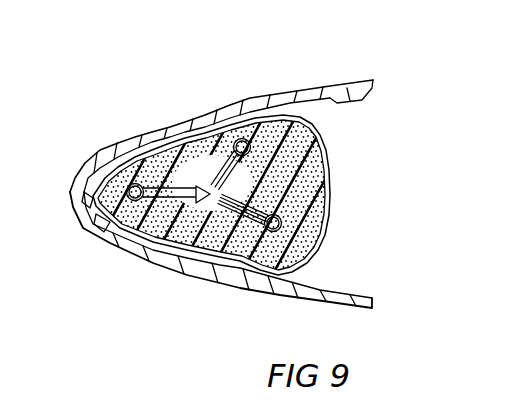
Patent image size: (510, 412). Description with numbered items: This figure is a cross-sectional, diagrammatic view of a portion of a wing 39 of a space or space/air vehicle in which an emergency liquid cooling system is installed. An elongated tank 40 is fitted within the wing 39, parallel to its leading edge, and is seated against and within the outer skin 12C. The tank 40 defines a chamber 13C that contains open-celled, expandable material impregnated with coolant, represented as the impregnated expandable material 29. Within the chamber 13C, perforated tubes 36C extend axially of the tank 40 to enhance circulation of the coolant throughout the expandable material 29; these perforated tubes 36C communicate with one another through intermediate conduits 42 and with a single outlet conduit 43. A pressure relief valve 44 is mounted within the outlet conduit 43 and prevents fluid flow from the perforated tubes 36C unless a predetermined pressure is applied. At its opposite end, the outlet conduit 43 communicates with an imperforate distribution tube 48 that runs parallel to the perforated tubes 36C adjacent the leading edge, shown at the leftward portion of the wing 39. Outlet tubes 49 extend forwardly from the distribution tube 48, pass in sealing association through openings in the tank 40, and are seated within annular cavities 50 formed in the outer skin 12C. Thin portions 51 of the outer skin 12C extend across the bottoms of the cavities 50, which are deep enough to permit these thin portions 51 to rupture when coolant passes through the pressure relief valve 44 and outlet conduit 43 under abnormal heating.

The outer skin 12C is at (300, 89).
The wing 39 is at (343, 84).
The perforated tubes 36C is at (242, 139).
The intermediate conduits 42 is at (198, 160).
The impregnated expandable material 29 is at (310, 131).
The chamber 13C is at (324, 172).
The tank 40 is at (322, 246).
The distribution tube 48 is at (127, 186).
The annular cavities 50 is at (90, 205).
The thin portions 51 is at (106, 232).
The outlet tubes 49 is at (122, 228).
The pressure relief valve 44 is at (145, 228).
The outlet conduit 43 is at (210, 262).